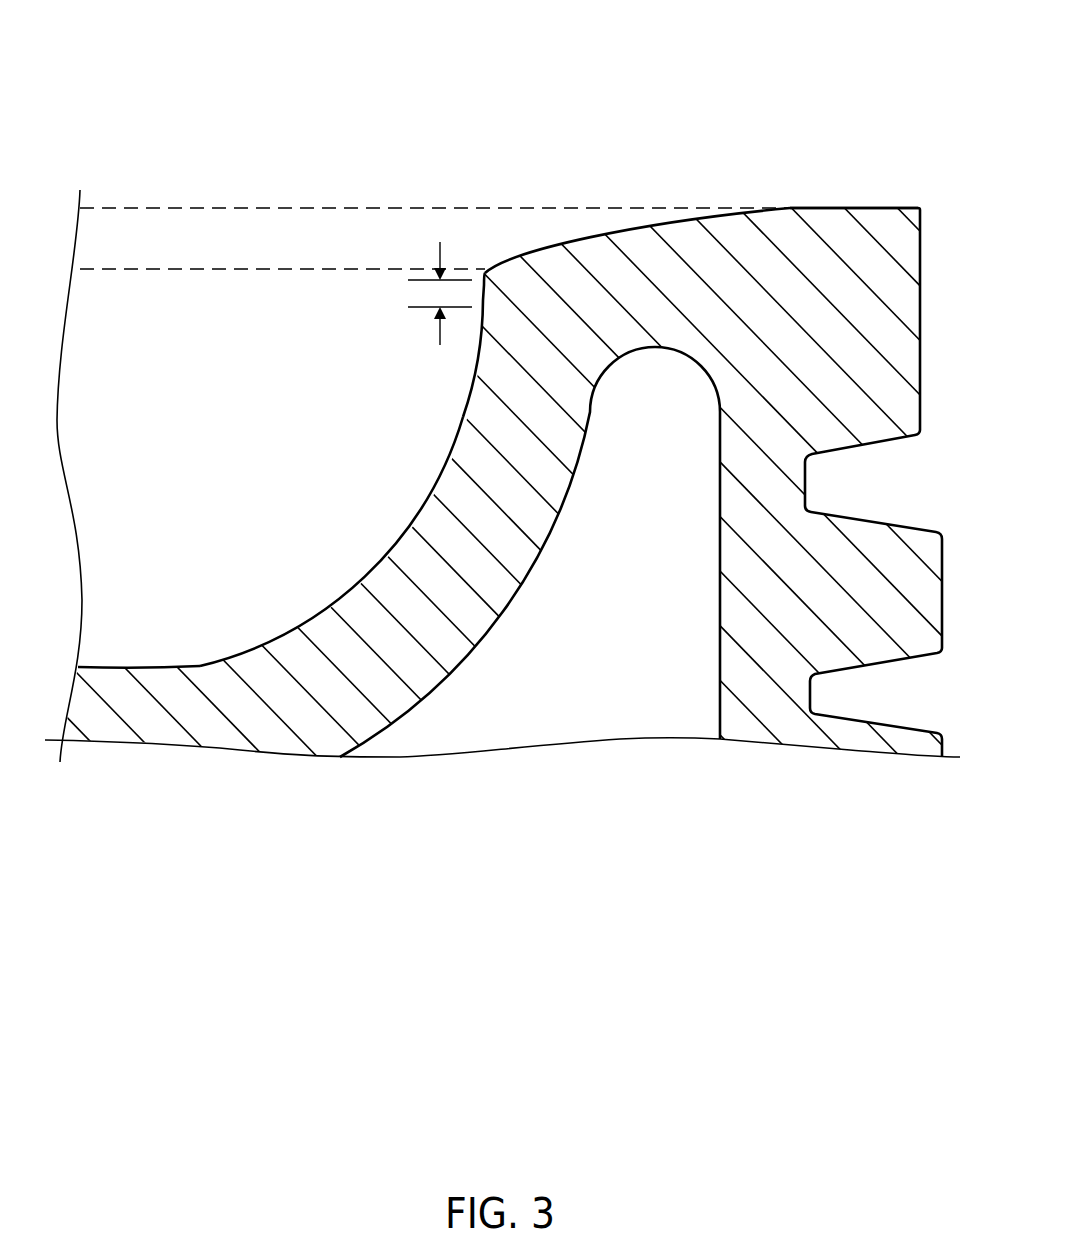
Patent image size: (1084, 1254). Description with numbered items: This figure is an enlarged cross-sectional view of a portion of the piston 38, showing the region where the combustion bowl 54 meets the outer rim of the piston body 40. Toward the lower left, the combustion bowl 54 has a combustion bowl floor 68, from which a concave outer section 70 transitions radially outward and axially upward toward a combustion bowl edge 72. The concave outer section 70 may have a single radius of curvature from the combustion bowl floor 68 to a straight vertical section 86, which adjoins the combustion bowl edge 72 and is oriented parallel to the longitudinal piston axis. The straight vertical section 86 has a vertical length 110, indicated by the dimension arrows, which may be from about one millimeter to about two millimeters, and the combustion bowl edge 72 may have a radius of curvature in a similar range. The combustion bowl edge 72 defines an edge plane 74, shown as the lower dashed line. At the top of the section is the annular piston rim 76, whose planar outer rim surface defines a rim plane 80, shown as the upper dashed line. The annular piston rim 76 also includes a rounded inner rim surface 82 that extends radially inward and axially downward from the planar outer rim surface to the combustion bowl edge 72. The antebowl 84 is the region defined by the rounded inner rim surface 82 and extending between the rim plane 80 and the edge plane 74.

The piston 38 is at (803, 63).
The piston body 40 is at (920, 207).
The combustion bowl 54 is at (184, 427).
The combustion bowl floor 68 is at (180, 667).
The concave outer section 70 is at (380, 549).
The combustion bowl edge 72 is at (485, 269).
The edge plane 74 is at (182, 271).
The annular piston rim 76 is at (789, 202).
The rim plane 80 is at (177, 207).
The rounded inner rim surface 82 is at (590, 231).
The antebowl 84 is at (282, 243).
The straight vertical section 86 is at (481, 290).
The vertical length 110 is at (422, 299).